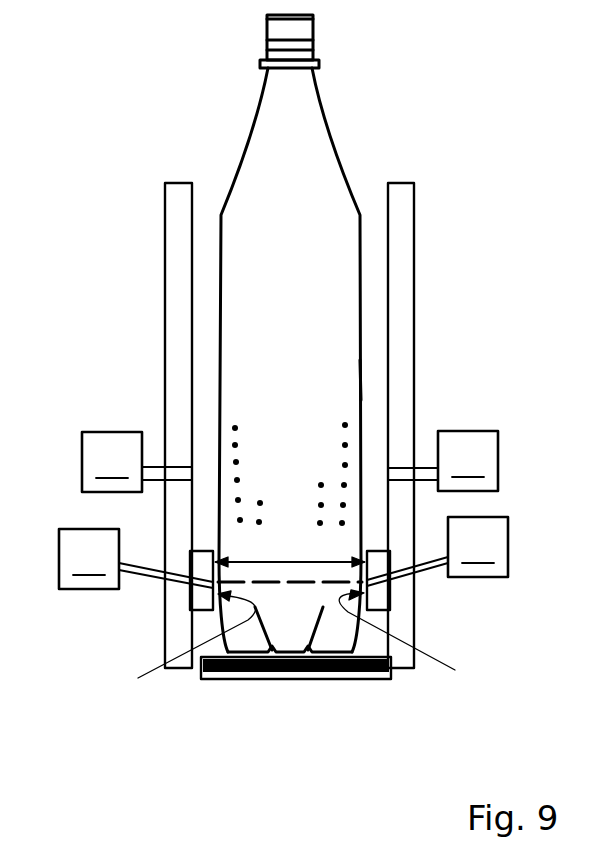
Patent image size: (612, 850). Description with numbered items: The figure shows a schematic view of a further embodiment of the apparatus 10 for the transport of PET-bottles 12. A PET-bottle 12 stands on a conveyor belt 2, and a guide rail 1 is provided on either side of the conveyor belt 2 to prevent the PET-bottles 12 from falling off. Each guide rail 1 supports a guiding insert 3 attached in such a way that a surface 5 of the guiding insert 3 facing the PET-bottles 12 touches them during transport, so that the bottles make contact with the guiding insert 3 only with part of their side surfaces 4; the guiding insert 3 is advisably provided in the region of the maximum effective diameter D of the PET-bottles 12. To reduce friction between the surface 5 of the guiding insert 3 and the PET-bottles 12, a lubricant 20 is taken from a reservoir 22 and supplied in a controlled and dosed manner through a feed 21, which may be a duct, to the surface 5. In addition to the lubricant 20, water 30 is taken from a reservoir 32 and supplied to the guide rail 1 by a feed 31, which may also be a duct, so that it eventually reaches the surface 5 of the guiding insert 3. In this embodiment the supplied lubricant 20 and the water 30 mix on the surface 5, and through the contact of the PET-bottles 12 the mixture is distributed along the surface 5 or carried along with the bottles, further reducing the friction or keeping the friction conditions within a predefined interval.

The apparatus 10 is at (120, 163).
The PET-bottle 12 is at (308, 198).
The guide rail 1 is at (165, 387).
The conveyor belt 2 is at (258, 676).
The guiding insert 3 is at (197, 598).
The side surface 4 is at (358, 382).
The surface 5 is at (295, 647).
The maximum effective diameter D is at (320, 560).
The lubricant 20 is at (283, 553).
The feed 21 is at (137, 578).
The reservoir 22 is at (68, 529).
The water 30 is at (290, 461).
The feed 31 is at (154, 466).
The reservoir 32 is at (82, 441).